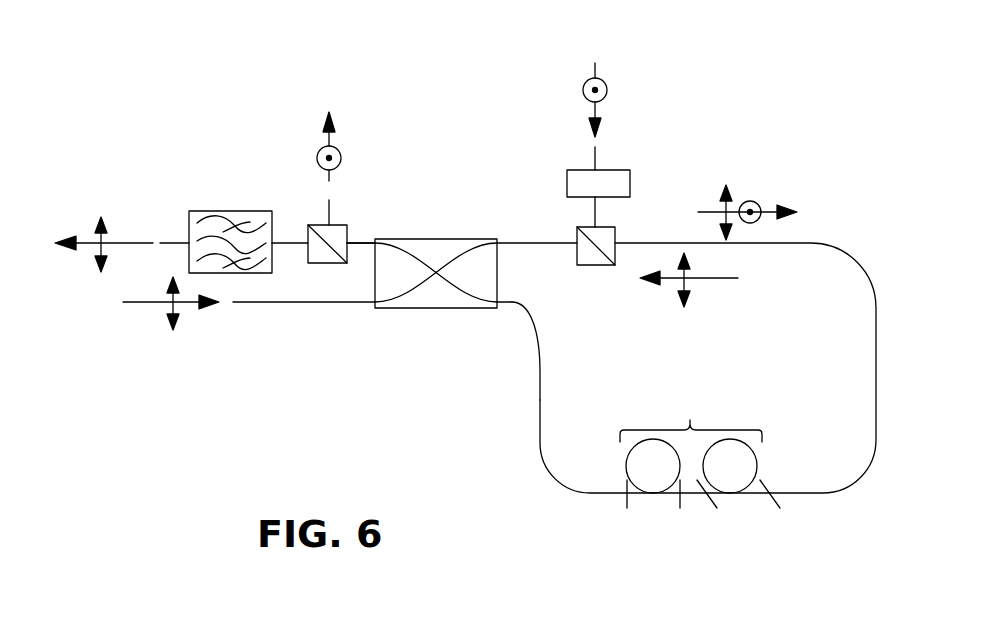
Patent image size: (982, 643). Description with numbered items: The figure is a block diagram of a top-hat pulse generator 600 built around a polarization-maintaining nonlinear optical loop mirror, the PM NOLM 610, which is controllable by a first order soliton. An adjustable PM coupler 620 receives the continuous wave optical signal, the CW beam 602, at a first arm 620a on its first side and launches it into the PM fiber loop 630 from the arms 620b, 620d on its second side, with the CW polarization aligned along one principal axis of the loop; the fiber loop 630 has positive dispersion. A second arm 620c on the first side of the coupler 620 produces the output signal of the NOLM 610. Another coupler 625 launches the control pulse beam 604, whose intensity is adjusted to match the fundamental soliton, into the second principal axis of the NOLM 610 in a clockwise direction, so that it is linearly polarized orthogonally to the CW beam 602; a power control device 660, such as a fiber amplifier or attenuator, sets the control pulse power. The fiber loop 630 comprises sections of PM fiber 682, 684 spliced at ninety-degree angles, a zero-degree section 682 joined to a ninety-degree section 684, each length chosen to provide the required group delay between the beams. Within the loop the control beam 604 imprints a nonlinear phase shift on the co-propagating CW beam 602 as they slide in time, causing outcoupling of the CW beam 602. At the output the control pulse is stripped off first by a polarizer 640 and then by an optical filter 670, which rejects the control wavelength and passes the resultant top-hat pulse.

The top-hat pulse generator 600 is at (477, 32).
The CW beam 602 is at (186, 306).
The control pulse beam 604 is at (601, 108).
The PM NOLM 610 is at (533, 476).
The adjustable PM coupler 620 is at (425, 238).
The first arm 620a is at (357, 310).
The second-side arm 620b is at (515, 243).
The second arm 620c is at (356, 240).
The second-side arm 620d is at (503, 312).
The coupler 625 is at (617, 232).
The PM fiber loop 630 is at (536, 376).
The polarizer 640 is at (307, 226).
The power control device 660 is at (630, 178).
The optical filter 670 is at (230, 210).
The 0° section of PM fiber 682 is at (625, 468).
The 90° section of PM fiber 684 is at (760, 468).